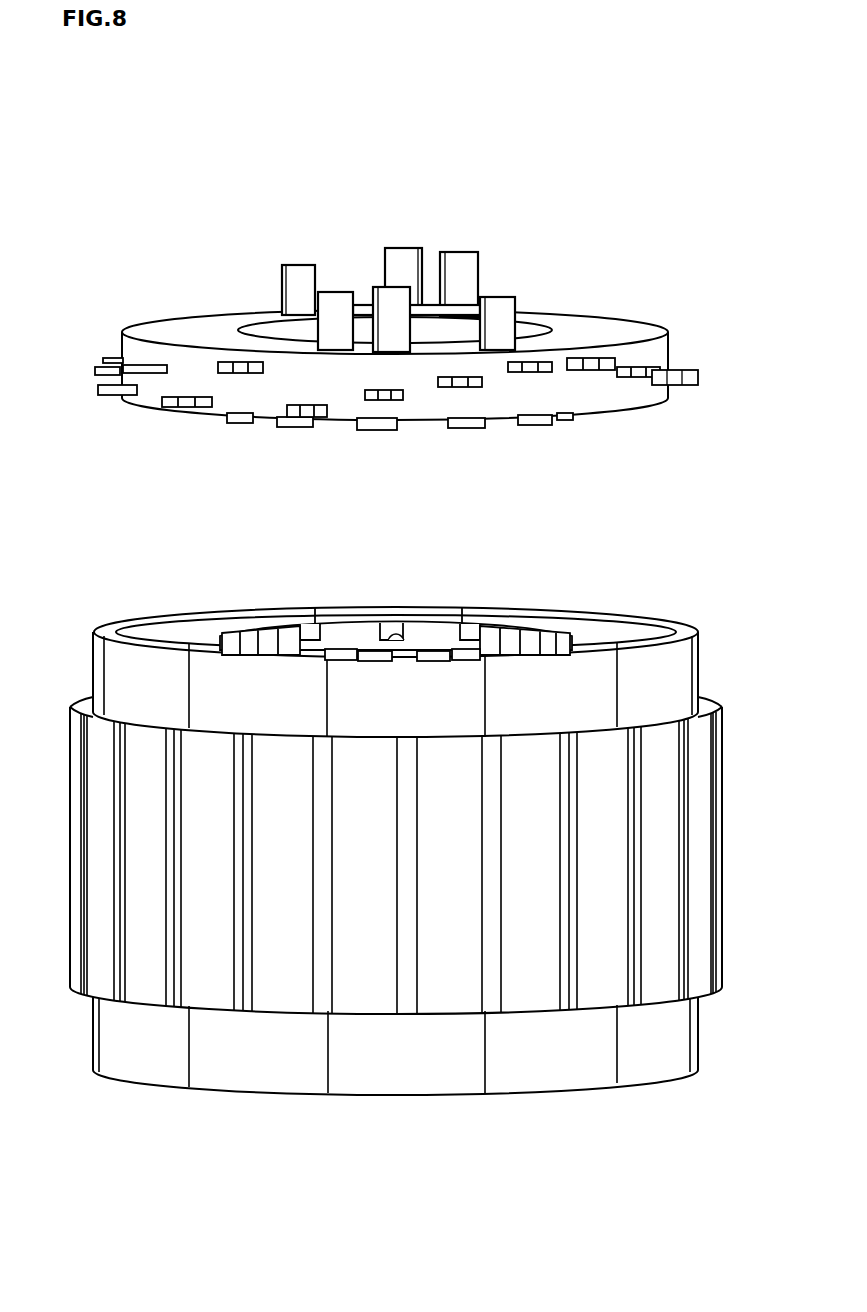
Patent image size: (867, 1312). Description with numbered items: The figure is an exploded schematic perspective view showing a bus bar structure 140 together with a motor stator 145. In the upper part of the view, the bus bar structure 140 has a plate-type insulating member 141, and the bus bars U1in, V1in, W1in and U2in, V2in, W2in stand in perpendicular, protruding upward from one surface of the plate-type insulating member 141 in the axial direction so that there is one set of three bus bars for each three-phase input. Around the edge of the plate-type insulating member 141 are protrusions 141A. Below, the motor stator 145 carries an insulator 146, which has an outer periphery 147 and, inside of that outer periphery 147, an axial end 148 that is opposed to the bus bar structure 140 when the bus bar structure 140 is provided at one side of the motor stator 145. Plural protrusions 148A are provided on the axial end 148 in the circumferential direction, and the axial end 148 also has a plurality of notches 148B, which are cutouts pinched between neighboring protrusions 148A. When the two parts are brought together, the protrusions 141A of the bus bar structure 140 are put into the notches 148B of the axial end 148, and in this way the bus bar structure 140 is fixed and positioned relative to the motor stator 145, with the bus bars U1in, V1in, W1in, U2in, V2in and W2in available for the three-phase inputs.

The bus bar structure 140 is at (403, 280).
The plate-type insulating member 141 is at (590, 326).
The protrusion 141A is at (684, 391).
The motor stator 145 is at (722, 762).
The insulator 146 is at (700, 641).
The outer periphery 147 is at (699, 702).
The axial end 148 is at (375, 613).
The protrusion 148A is at (333, 613).
The notch 148B is at (475, 622).
The bus bar V2in is at (279, 260).
The bus bar U1in is at (333, 286).
The bus bar W1in is at (377, 281).
The bus bar W2in is at (405, 241).
The bus bar U2in is at (463, 246).
The bus bar V1in is at (503, 291).